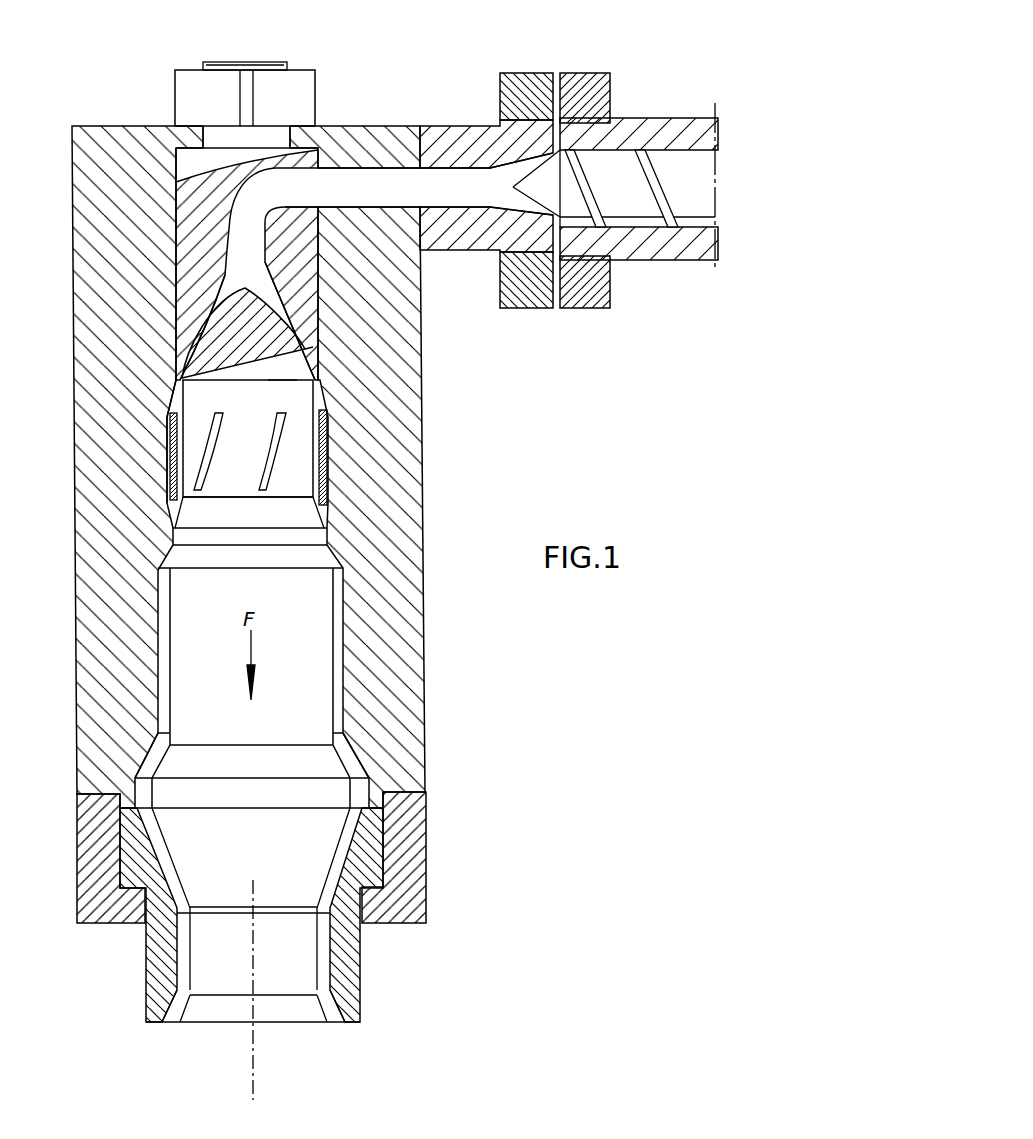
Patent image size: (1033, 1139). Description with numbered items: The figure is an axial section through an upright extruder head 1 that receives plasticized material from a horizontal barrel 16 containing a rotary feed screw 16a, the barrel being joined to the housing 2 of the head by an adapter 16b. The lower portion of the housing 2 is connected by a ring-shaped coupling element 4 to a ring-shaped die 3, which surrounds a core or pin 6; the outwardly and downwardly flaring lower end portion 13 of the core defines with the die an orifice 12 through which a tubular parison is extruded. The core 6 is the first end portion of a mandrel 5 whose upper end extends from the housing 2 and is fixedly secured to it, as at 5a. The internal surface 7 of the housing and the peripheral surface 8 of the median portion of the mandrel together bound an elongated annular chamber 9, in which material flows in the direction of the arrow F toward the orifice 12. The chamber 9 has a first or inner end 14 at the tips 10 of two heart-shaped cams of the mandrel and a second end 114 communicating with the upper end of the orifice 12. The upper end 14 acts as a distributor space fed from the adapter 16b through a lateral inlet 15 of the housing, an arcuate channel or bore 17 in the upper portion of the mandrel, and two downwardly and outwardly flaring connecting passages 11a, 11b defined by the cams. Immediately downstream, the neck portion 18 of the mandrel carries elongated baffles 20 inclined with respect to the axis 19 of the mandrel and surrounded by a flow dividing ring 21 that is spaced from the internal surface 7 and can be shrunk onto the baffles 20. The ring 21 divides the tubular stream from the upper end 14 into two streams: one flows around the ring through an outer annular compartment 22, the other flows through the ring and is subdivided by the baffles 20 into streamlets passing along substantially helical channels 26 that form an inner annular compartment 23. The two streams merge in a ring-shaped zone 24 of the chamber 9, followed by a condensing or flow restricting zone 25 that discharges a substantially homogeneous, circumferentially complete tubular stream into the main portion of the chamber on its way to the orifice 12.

The extruder head 1 is at (267, 467).
The housing 2 is at (408, 605).
The ring-shaped die 3 is at (283, 935).
The ring-shaped coupling element 4 is at (410, 838).
The mandrel 5 is at (262, 64).
The fixed securing point of mandrel 5a is at (302, 83).
The core or pin 6 is at (305, 950).
The internal surface of housing 7 is at (160, 600).
The peripheral surface of mandrel 8 is at (167, 640).
The elongated annular chamber 9 is at (163, 695).
The tips of heart-shaped cams 10 is at (176, 376).
The first connecting passage 11a is at (198, 317).
The second connecting passage 11b is at (320, 315).
The extrusion orifice 12 is at (328, 1002).
The flaring lower end portion of core 13 is at (188, 1012).
The first or inner end of chamber 14 is at (317, 402).
The lateral inlet 15 is at (380, 176).
The horizontal barrel 16 is at (667, 118).
The rotary feed screw 16a is at (640, 203).
The adapter 16b is at (455, 150).
The arcuate channel or bore 17 is at (238, 220).
The neck portion of mandrel 18 is at (192, 468).
The axis of mandrel 19 is at (253, 1092).
The baffles 20 is at (273, 443).
The flow dividing ring 21 is at (325, 440).
The outer annular compartment 22 is at (168, 430).
The inner annular compartment 23 is at (178, 492).
The ring-shaped merging zone 24 is at (328, 520).
The condensing or flow restricting zone 25 is at (175, 540).
The helical channels 26 is at (302, 484).
The second end of chamber 114 is at (357, 792).